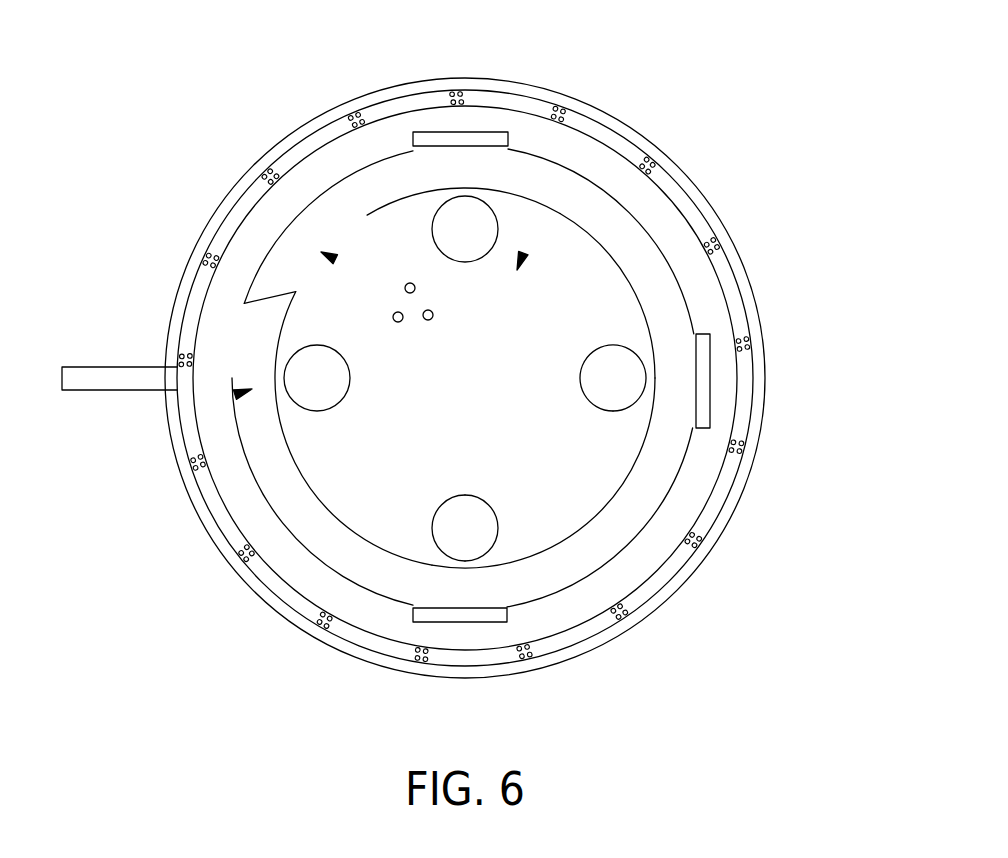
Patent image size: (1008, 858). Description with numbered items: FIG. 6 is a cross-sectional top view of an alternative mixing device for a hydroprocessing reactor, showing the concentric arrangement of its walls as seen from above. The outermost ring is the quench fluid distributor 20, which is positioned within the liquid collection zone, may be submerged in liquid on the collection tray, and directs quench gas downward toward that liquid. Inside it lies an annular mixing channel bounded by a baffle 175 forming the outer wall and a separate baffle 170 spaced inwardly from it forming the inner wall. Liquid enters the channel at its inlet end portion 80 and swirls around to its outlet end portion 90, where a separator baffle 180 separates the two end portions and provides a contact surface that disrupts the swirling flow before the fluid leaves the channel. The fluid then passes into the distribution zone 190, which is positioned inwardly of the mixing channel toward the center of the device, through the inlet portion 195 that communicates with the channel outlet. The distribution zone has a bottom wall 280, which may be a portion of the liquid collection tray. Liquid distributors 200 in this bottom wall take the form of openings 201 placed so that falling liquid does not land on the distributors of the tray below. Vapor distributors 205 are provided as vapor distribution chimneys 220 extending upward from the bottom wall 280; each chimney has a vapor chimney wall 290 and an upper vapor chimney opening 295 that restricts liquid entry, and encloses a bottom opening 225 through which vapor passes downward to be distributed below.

The quench fluid distributor 20 is at (740, 432).
The inlet end portion 80 is at (236, 394).
The outlet end portion 90 is at (335, 259).
The baffle 170 is at (358, 533).
The baffle 175 is at (267, 507).
The separator baffle 180 is at (277, 293).
The distribution zone 190 is at (523, 253).
The inlet portion 195 is at (348, 225).
The liquid distributor 200 is at (433, 310).
The opening 201 is at (398, 322).
The vapor distributor 205 is at (620, 362).
The vapor distribution chimney 220 is at (437, 550).
The bottom opening 225 is at (473, 538).
The bottom wall 280 is at (582, 460).
The vapor chimney wall 290 is at (342, 393).
The upper vapor chimney opening 295 is at (583, 368).